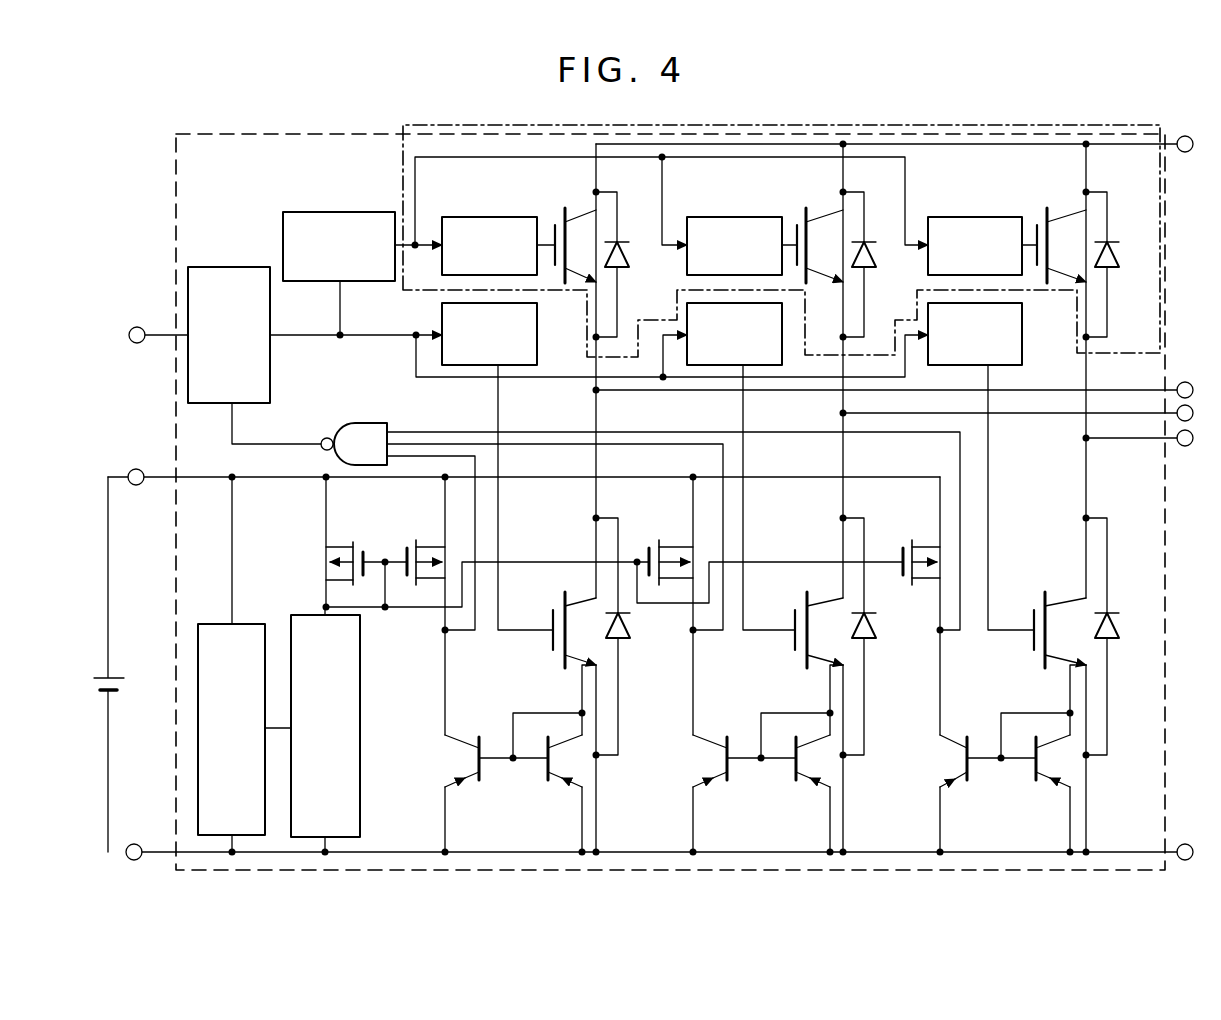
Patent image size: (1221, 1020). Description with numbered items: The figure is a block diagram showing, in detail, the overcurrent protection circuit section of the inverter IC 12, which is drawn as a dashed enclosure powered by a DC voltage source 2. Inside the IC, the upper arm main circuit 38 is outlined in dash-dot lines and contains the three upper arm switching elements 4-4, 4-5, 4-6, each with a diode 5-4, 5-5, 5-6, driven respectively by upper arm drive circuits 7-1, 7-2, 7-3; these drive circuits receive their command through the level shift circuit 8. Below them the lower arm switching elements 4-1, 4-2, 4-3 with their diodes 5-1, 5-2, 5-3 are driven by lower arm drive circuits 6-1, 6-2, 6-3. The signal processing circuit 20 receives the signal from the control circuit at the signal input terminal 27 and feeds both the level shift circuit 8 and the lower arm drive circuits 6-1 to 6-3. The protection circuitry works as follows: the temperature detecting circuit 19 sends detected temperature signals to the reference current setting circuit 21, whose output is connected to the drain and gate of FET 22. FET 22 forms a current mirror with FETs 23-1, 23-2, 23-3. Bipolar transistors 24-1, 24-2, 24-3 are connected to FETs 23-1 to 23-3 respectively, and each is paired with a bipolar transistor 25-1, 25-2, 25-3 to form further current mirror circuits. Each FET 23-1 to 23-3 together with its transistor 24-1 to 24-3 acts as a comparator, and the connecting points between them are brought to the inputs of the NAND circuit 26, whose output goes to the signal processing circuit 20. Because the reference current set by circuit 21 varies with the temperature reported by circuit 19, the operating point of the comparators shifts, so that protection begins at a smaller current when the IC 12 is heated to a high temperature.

The DC voltage source 2 is at (124, 683).
The level shift circuit 8 is at (324, 212).
The inverter IC 12 is at (1076, 134).
The temperature detecting circuit 19 is at (253, 624).
The signal processing circuit 20 is at (246, 267).
The reference current setting circuit 21 is at (360, 682).
The FET 22 is at (322, 568).
The FET 23-1 is at (406, 544).
The FET 23-2 is at (650, 544).
The FET 23-3 is at (904, 544).
The bipolar transistor 24-1 is at (454, 766).
The bipolar transistor 24-2 is at (709, 760).
The bipolar transistor 24-3 is at (950, 762).
The bipolar transistor 25-1 is at (542, 775).
The bipolar transistor 25-2 is at (792, 776).
The bipolar transistor 25-3 is at (1032, 775).
The NAND circuit 26 is at (362, 423).
The signal input terminal 27 is at (138, 327).
The upper arm main circuit 38 is at (868, 125).
The switching element 4-1 is at (551, 608).
The switching element 4-2 is at (798, 608).
The switching element 4-3 is at (1037, 608).
The switching element 4-4 is at (556, 223).
The switching element 4-5 is at (799, 223).
The switching element 4-6 is at (1039, 223).
The diode 5-1 is at (632, 625).
The diode 5-2 is at (878, 625).
The diode 5-3 is at (1121, 625).
The diode 5-4 is at (630, 256).
The diode 5-5 is at (877, 256).
The diode 5-6 is at (1120, 256).
The lower arm drive circuit 6-1 is at (537, 328).
The lower arm drive circuit 6-2 is at (782, 328).
The lower arm drive circuit 6-3 is at (1022, 328).
The upper arm drive circuit 7-1 is at (455, 217).
The upper arm drive circuit 7-2 is at (701, 217).
The upper arm drive circuit 7-3 is at (949, 217).